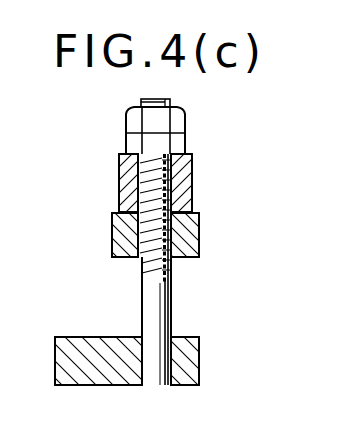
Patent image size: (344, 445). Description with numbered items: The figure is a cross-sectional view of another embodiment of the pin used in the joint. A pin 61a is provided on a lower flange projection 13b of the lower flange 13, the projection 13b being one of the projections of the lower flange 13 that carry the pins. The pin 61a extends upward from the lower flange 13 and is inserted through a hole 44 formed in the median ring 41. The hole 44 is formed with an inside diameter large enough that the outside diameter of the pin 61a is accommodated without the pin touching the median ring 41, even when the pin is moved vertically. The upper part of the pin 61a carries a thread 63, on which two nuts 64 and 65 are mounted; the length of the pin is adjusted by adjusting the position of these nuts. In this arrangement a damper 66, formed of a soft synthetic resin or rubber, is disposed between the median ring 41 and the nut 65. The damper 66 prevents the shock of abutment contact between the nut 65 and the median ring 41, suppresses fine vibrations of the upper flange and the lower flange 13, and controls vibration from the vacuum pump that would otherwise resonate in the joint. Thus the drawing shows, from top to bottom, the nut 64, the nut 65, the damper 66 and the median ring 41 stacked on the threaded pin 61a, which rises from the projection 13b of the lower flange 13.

The nut 64 is at (178, 117).
The nut 65 is at (178, 142).
The damper 66 is at (191, 188).
The median ring 41 is at (195, 240).
The thread 63 is at (150, 185).
The hole 44 is at (149, 242).
The pin 61a is at (165, 297).
The lower flange 13 is at (102, 375).
The lower flange projection 13b is at (187, 372).